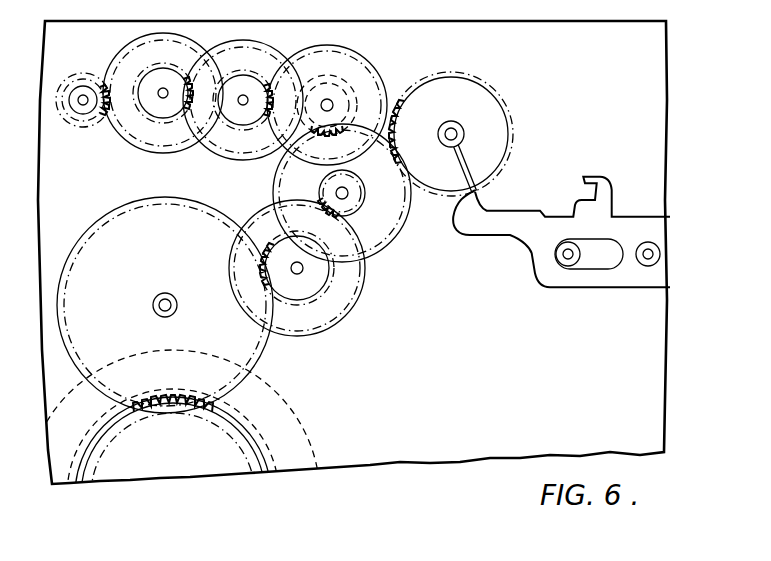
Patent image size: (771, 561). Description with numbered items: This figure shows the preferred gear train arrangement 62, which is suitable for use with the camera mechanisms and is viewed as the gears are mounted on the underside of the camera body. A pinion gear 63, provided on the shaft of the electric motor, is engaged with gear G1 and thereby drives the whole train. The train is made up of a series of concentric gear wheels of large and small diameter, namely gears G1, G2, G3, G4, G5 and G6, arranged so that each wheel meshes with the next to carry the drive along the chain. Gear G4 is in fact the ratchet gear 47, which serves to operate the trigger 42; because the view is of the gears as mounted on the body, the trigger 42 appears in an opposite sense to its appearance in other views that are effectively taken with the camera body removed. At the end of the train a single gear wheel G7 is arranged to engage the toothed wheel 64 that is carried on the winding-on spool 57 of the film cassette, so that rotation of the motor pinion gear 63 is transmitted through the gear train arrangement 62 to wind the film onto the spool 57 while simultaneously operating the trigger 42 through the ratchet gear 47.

The gear train arrangement 62 is at (376, 61).
The pinion gear 63 is at (85, 123).
The gear wheel G1 is at (157, 153).
The gear wheel G2 is at (230, 153).
The gear wheel G3 is at (303, 163).
The gear wheel G4 is at (495, 102).
The ratchet gear 47 is at (498, 147).
The trigger 42 is at (530, 210).
The gear wheel G5 is at (385, 208).
The gear wheel G6 is at (347, 273).
The single gear wheel G7 is at (97, 248).
The toothed wheel 64 is at (195, 417).
The winding-on spool 57 is at (296, 410).